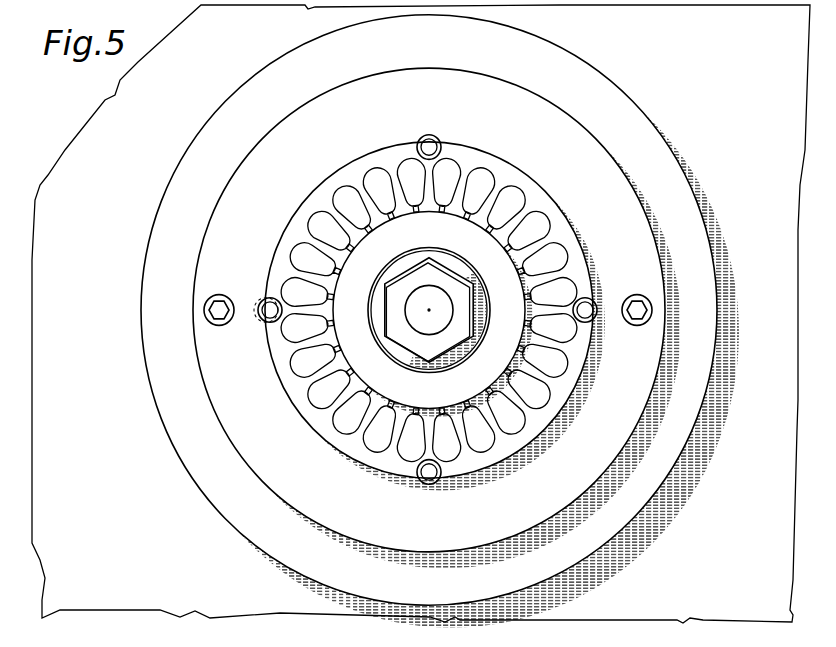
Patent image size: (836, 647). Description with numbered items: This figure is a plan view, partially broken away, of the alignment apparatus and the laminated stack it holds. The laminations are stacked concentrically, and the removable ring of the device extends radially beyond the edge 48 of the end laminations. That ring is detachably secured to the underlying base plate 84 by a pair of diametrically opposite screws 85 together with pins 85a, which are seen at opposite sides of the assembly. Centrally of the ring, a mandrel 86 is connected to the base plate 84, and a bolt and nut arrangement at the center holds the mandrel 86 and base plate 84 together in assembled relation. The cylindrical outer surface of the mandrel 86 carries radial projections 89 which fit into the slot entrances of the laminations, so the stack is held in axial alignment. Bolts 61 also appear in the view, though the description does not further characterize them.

The edge of the end laminations 48 is at (567, 222).
The bolts 61 is at (437, 140).
The base plate 84 is at (410, 267).
The screws 85 is at (219, 296).
The pins 85a is at (260, 306).
The mandrel 86 is at (463, 237).
The radial projections 89 is at (491, 228).